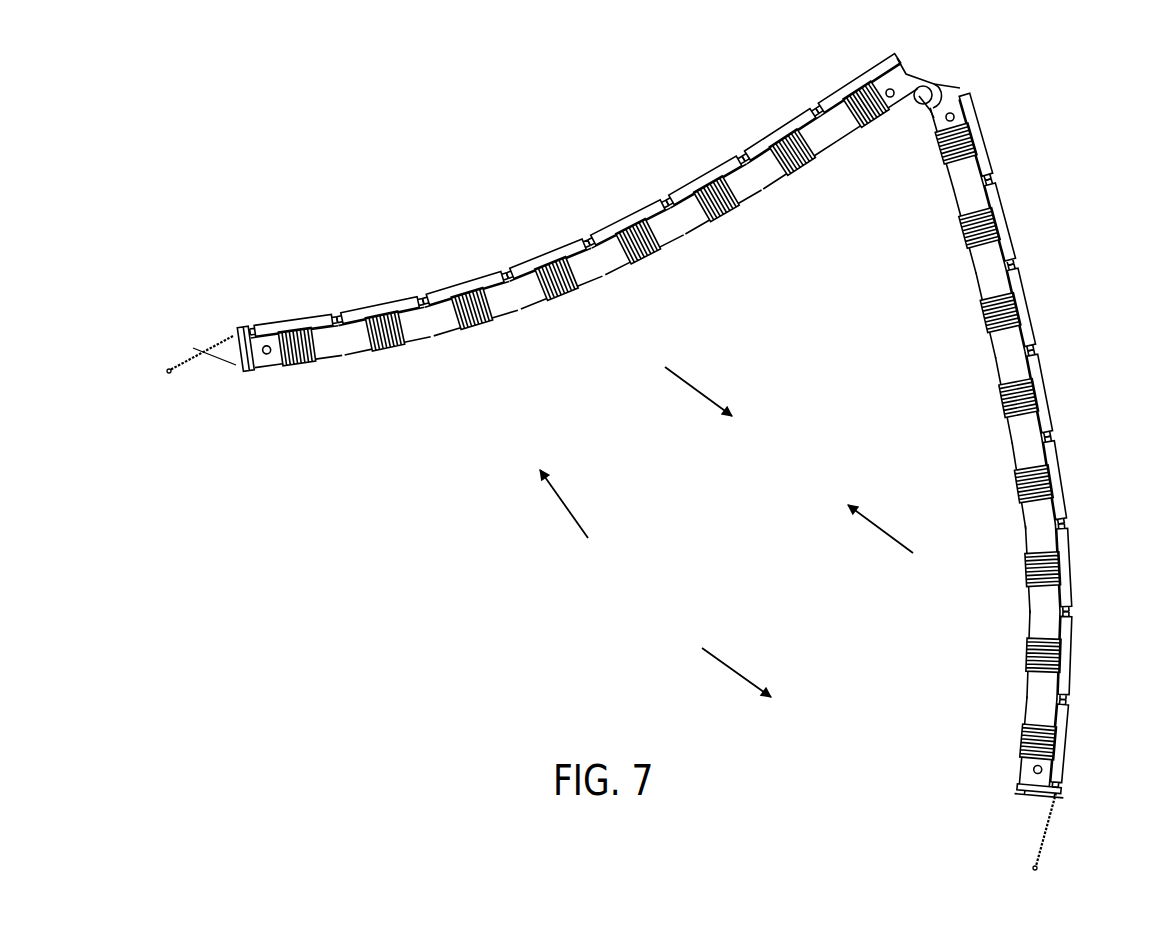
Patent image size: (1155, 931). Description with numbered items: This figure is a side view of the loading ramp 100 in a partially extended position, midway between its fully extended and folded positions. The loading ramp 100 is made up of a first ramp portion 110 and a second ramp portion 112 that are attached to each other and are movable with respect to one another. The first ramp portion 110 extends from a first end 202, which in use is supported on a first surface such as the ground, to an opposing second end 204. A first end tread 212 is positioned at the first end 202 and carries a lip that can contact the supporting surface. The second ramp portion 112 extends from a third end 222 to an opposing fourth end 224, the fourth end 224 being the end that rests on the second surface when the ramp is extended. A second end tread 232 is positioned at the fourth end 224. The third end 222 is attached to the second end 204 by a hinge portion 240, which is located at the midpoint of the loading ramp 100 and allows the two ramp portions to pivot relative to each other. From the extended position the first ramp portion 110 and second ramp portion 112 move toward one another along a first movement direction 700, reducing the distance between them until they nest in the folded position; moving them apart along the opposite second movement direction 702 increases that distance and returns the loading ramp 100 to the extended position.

The loading ramp 100 is at (335, 195).
The first ramp portion 110 is at (471, 215).
The second ramp portion 112 is at (1091, 546).
The first end 202 is at (254, 280).
The second end 204 is at (911, 51).
The first end tread 212 is at (194, 349).
The third end 222 is at (992, 107).
The fourth end 224 is at (1079, 767).
The second end tread 232 is at (1053, 832).
The hinge portion 240 is at (938, 84).
The first movement direction 700 is at (697, 390).
The second movement direction 702 is at (563, 503).